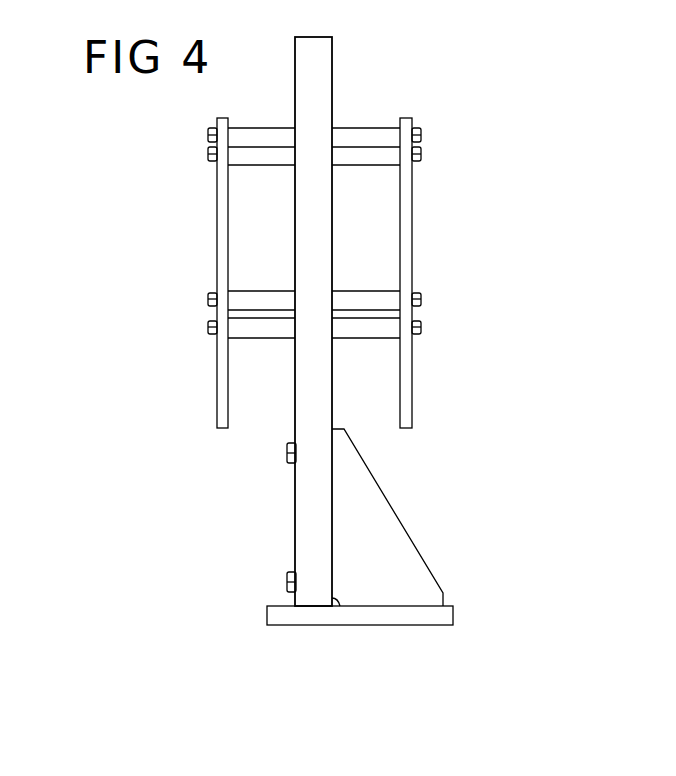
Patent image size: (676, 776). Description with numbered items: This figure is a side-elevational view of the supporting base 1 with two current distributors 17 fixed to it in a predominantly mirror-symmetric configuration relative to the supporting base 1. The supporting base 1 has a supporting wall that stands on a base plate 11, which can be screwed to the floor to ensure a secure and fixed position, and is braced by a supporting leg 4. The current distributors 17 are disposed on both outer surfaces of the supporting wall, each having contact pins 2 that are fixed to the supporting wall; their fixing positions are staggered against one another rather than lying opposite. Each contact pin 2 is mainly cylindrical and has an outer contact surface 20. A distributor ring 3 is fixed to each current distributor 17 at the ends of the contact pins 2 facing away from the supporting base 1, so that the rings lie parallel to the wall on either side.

The supporting base 1 is at (310, 58).
The current distributor 17 is at (429, 212).
The distributor ring 3 is at (407, 360).
The outer contact surface 20 is at (360, 135).
The contact pin 2 is at (363, 157).
The supporting leg 4 is at (380, 500).
The base plate 11 is at (374, 615).